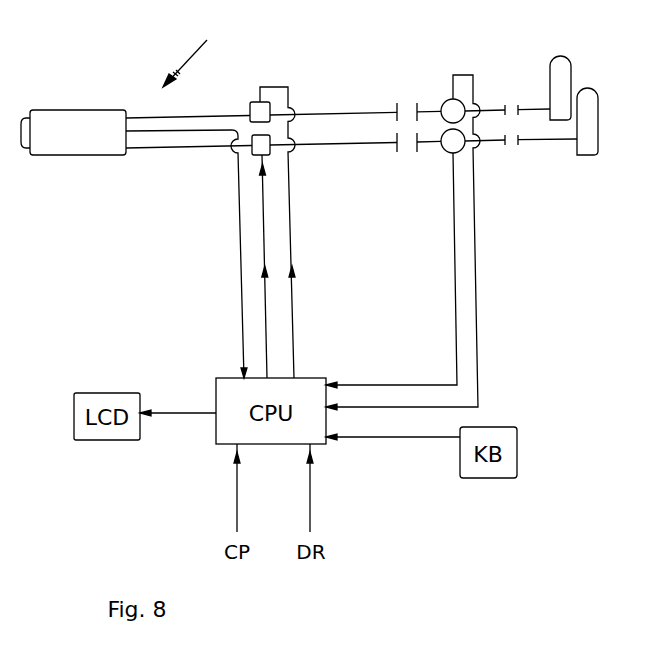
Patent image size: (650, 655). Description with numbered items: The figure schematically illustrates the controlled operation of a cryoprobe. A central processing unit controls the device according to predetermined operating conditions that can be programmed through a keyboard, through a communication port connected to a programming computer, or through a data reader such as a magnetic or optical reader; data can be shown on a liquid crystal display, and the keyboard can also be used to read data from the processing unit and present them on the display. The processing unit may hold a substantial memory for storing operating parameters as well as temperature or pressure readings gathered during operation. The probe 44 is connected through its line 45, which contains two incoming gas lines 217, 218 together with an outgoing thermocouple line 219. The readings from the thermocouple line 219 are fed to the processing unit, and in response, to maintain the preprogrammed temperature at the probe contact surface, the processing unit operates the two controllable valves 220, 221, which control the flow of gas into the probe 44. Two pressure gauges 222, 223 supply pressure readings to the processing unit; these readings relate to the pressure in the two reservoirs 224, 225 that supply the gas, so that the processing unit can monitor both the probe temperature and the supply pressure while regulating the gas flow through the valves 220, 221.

The probe 44 is at (68, 111).
The line 45 is at (193, 53).
The incoming gas line 217 is at (170, 117).
The incoming gas line 218 is at (212, 149).
The outgoing thermocouple line 219 is at (175, 132).
The controllable valve 220 is at (270, 101).
The controllable valve 221 is at (272, 157).
The pressure gauge 222 is at (442, 102).
The pressure gauge 223 is at (442, 148).
The reservoir 224 is at (562, 67).
The reservoir 225 is at (587, 150).